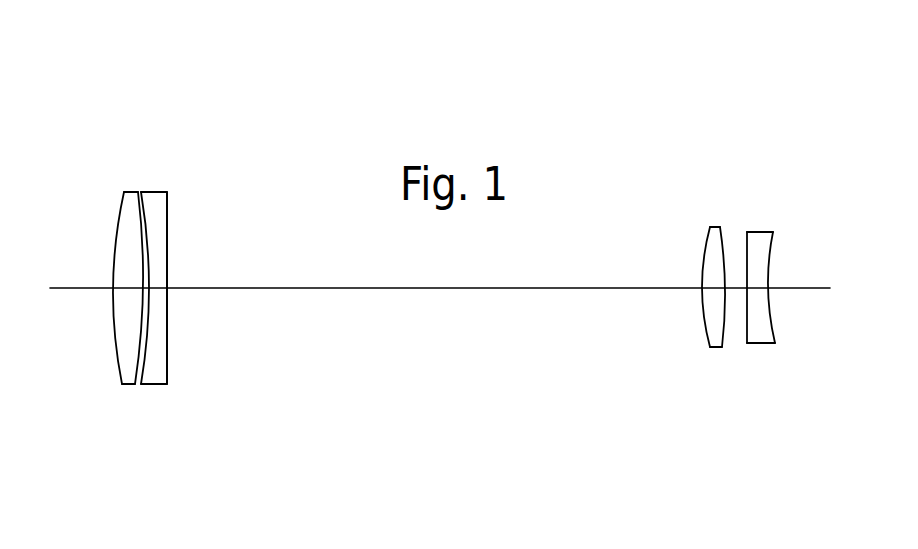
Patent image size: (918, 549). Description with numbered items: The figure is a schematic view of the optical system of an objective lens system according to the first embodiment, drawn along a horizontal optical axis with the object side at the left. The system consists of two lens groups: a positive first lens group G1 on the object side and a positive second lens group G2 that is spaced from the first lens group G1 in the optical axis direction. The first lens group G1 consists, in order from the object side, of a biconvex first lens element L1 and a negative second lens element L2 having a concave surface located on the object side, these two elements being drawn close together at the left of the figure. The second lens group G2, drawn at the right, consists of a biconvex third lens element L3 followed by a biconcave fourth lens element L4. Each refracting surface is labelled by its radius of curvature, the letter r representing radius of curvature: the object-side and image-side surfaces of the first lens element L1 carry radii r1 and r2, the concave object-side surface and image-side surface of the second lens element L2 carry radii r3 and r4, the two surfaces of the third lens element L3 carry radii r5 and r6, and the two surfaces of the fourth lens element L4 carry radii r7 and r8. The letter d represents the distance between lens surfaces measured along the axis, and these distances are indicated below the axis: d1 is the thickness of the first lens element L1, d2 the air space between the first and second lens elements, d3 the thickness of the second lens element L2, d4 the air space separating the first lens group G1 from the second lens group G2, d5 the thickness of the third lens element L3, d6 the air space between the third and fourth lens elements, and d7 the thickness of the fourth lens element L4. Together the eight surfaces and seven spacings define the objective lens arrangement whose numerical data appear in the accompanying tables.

The first lens group G1 is at (88, 90).
The second lens group G2 is at (672, 92).
The first lens element L1 is at (128, 216).
The second lens element L2 is at (157, 210).
The third lens element L3 is at (710, 248).
The fourth lens element L4 is at (763, 247).
The radius of curvature of first lens surface r1 is at (124, 192).
The radius of curvature of second lens surface r2 is at (137, 192).
The radius of curvature of third lens surface r3 is at (141, 192).
The radius of curvature of fourth lens surface r4 is at (167, 192).
The radius of curvature of fifth lens surface r5 is at (710, 227).
The radius of curvature of sixth lens surface r6 is at (720, 227).
The radius of curvature of seventh lens surface r7 is at (747, 232).
The radius of curvature of eighth lens surface r8 is at (773, 232).
The distance between lens surfaces d1 is at (130, 288).
The distance between lens surfaces d2 is at (142, 290).
The distance between lens surfaces d3 is at (153, 290).
The distance between lens surfaces d4 is at (438, 288).
The distance between lens surfaces d5 is at (708, 288).
The distance between lens surfaces d6 is at (738, 288).
The distance between lens surfaces d7 is at (758, 288).